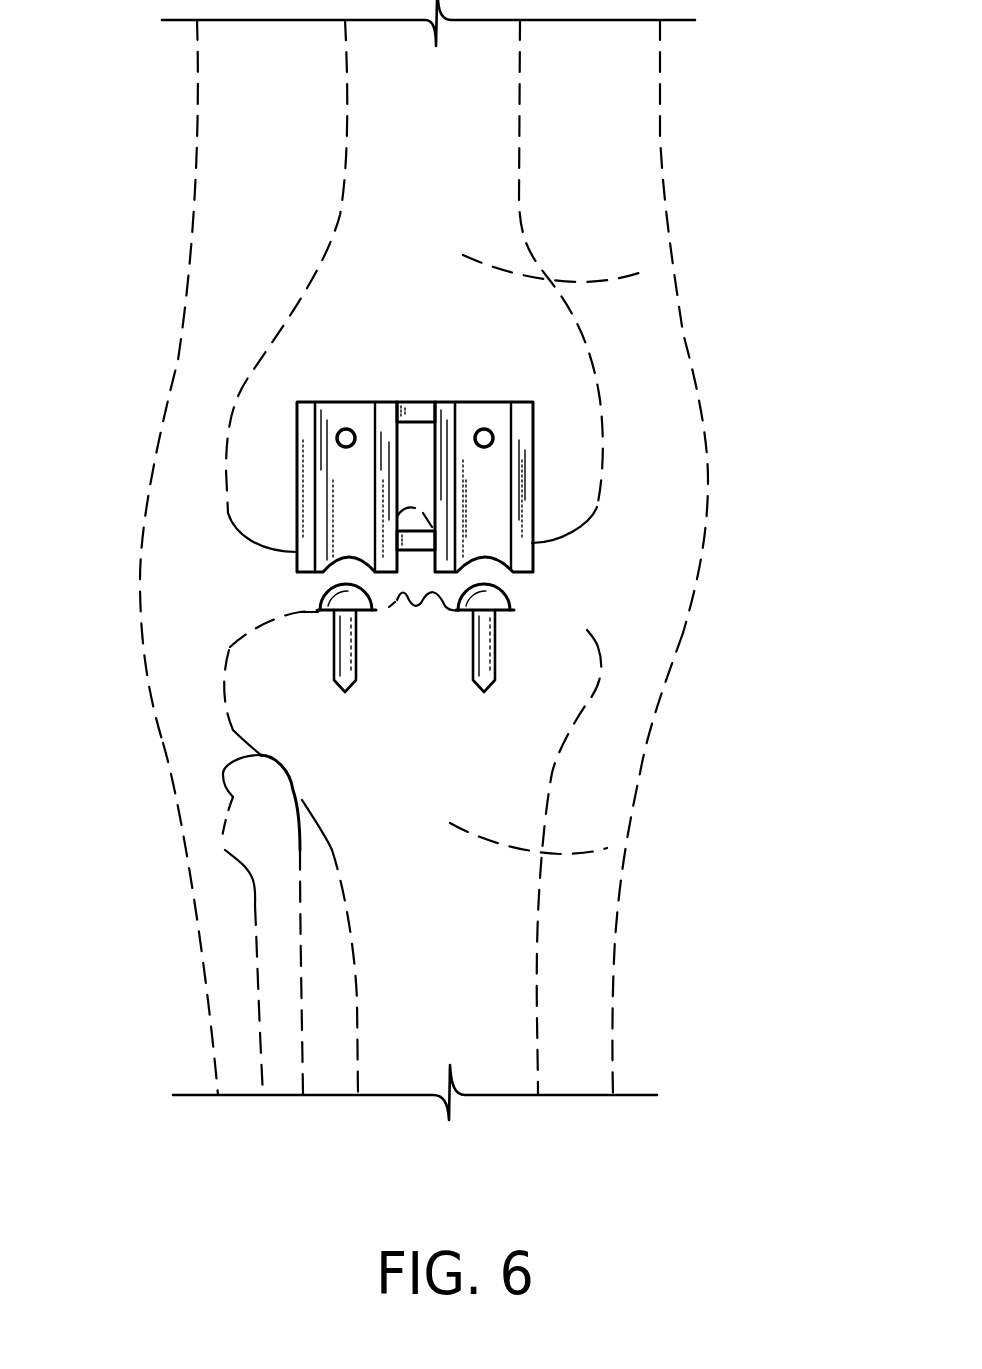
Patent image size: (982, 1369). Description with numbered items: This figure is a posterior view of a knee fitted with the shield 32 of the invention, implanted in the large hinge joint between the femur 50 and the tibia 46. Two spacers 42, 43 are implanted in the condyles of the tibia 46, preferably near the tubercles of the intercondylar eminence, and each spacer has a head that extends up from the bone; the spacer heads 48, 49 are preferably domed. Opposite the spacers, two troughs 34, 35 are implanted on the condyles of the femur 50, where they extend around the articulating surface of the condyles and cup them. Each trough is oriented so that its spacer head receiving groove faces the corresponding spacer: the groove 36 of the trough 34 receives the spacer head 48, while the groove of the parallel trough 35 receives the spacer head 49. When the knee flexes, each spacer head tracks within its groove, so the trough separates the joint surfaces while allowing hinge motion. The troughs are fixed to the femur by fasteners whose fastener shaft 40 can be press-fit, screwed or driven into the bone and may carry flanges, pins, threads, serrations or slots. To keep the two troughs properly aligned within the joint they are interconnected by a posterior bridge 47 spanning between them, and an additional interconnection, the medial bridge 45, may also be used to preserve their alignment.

The shield 32 is at (300, 516).
The trough 34 is at (525, 507).
The trough 35 is at (306, 452).
The spacer head receiving groove 36 is at (488, 537).
The fastener shaft 40 is at (490, 438).
The spacer 42 is at (497, 650).
The spacer 43 is at (350, 645).
The medial bridge 45 is at (413, 543).
The tibia 46 is at (607, 848).
The posterior bridge 47 is at (413, 412).
The spacer head 48 is at (497, 612).
The spacer head 49 is at (345, 600).
The femur 50 is at (647, 270).